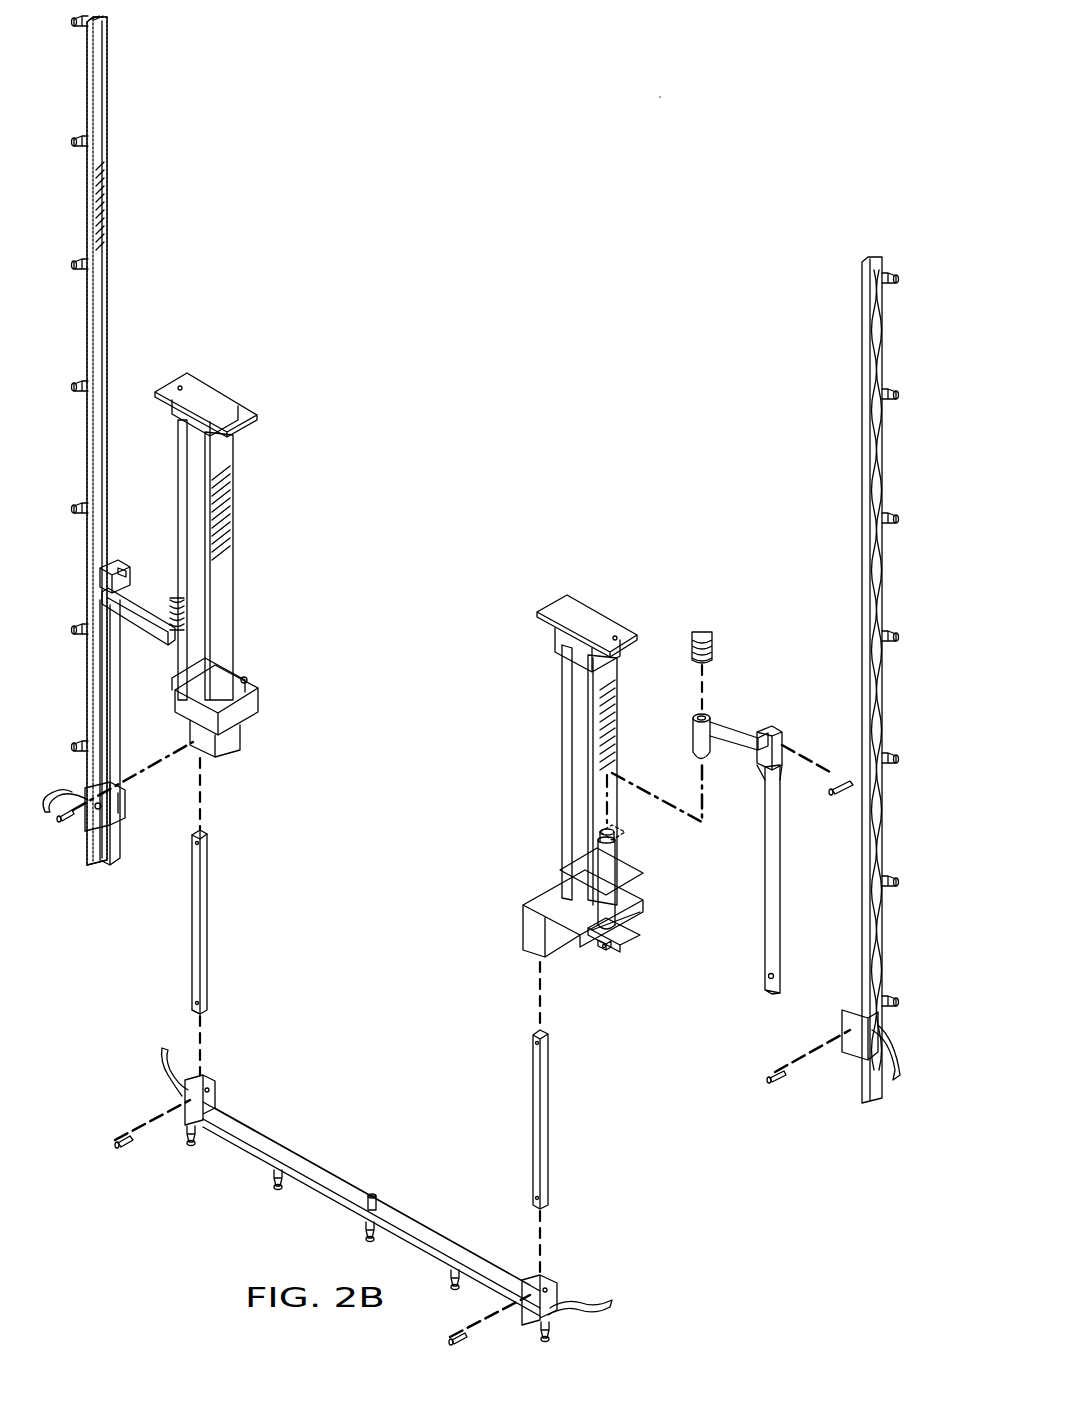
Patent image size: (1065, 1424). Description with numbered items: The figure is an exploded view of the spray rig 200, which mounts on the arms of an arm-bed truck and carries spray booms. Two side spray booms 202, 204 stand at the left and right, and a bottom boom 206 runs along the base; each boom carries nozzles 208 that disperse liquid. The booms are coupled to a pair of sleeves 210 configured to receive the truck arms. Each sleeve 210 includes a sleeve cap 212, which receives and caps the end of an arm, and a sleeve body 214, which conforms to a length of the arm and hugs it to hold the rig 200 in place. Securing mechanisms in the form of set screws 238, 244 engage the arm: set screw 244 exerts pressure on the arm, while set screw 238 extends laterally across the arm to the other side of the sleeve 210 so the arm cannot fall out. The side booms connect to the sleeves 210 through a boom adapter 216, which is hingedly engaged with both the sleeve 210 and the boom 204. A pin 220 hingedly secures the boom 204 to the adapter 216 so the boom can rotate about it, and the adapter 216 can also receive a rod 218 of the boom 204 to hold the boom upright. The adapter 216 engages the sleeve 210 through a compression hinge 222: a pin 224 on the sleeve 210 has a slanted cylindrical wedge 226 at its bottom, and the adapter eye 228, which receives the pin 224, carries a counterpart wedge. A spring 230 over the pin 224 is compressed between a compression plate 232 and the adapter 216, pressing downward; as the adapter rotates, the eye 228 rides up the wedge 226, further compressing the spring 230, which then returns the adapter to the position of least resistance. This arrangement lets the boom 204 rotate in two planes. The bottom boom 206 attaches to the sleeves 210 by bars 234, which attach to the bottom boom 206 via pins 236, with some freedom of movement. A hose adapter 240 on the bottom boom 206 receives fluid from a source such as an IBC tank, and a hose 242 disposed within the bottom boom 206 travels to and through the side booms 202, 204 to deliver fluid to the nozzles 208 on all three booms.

The spray rig 200 is at (663, 92).
The side spray boom 202 is at (107, 60).
The side spray boom 204 is at (862, 292).
The bottom boom 206 is at (430, 1235).
The nozzle 208 is at (78, 140).
The sleeve 210 is at (227, 380).
The sleeve cap 212 is at (175, 385).
The sleeve body 214 is at (232, 570).
The boom adapter 216 is at (760, 893).
The rod 218 is at (838, 796).
The pin 220 is at (780, 1085).
The compression hinge 222 is at (172, 582).
The pin 224 is at (620, 876).
The slanted cylindrical wedge 226 is at (625, 930).
The adapter eye 228 is at (694, 745).
The spring 230 is at (714, 640).
The compression plate 232 is at (625, 838).
The bar 234 is at (192, 925).
The pin 236 is at (124, 1150).
The set screw 238 is at (248, 680).
The hose adapter 240 is at (372, 1193).
The hose 242 is at (58, 792).
The set screw 244 is at (612, 950).